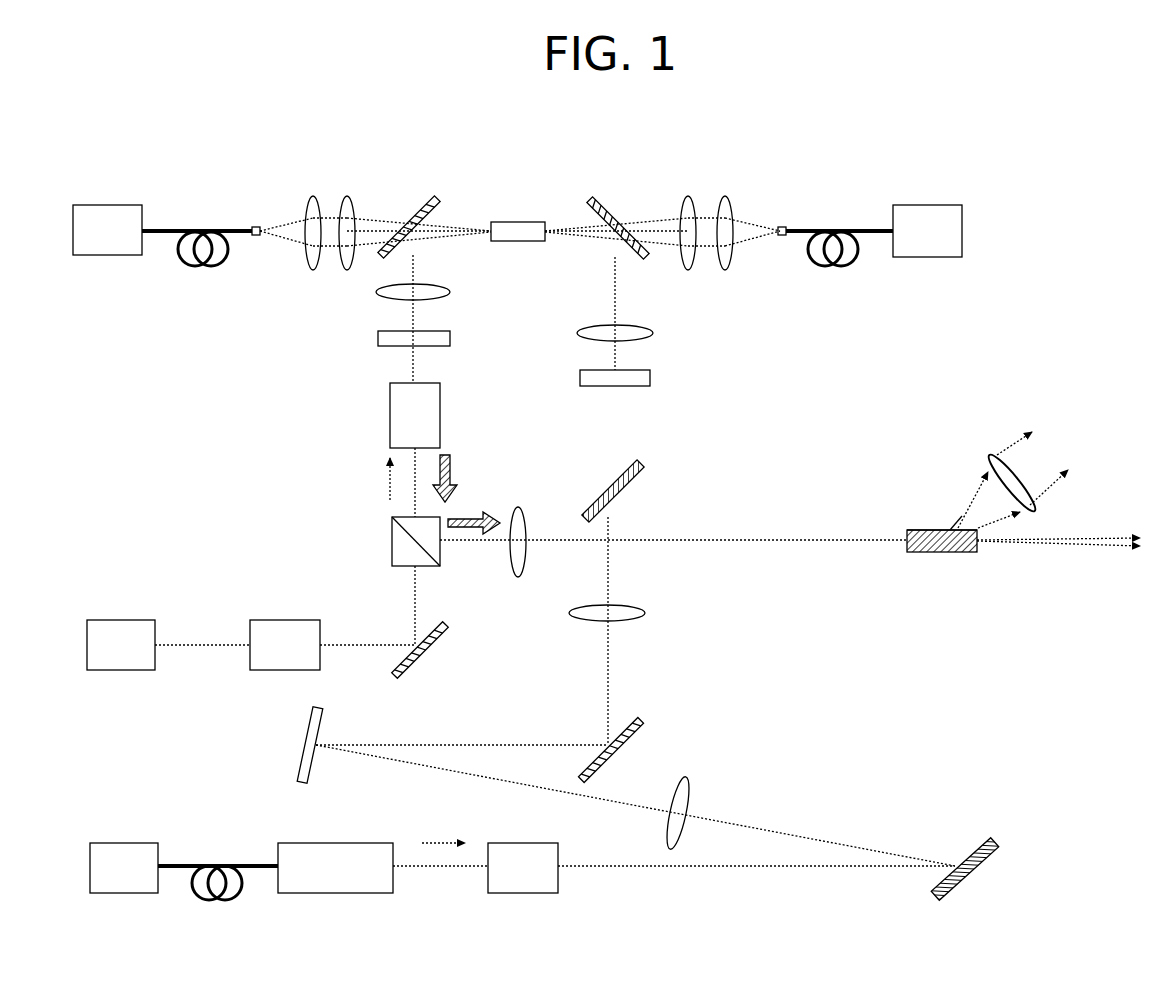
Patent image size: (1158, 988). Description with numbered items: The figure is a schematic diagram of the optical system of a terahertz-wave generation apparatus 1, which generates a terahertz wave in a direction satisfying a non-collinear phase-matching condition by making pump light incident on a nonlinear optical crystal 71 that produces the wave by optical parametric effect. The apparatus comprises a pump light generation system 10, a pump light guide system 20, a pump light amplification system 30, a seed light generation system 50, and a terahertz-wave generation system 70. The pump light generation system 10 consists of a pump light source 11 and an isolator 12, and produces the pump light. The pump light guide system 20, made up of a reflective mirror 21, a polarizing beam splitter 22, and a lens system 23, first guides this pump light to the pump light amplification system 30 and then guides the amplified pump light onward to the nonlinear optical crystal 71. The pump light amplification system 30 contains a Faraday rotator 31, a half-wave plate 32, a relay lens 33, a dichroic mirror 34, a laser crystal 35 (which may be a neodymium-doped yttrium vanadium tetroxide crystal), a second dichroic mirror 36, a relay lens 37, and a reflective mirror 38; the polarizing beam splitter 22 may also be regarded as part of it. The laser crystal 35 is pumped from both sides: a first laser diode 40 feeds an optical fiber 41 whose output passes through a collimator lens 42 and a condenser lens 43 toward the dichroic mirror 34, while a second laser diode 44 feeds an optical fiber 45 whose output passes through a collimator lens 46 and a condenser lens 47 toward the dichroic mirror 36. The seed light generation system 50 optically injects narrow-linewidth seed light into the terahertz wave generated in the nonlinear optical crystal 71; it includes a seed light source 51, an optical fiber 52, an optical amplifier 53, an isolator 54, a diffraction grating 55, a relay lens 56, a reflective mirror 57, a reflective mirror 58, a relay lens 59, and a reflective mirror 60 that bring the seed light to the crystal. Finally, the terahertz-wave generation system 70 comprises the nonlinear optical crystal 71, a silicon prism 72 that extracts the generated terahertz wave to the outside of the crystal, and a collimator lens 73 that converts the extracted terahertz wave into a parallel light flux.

The terahertz-wave generation apparatus 1 is at (1064, 238).
The pump light generation system 10 is at (220, 582).
The pump light source 11 is at (151, 620).
The isolator 12 is at (318, 620).
The pump light guide system 20 is at (477, 624).
The reflective mirror 21 is at (430, 663).
The polarizing beam splitter 22 is at (390, 534).
The lens system 23 is at (518, 506).
The pump light amplification system 30 is at (519, 156).
The Faraday rotator 31 is at (440, 383).
The half-wave plate 32 is at (450, 338).
The relay lens 33 is at (450, 292).
The dichroic mirror 34 is at (433, 203).
The laser crystal 35 is at (518, 221).
The dichroic mirror 36 is at (599, 203).
The relay lens 37 is at (652, 333).
The reflective mirror 38 is at (652, 377).
The first laser diode 40 is at (142, 205).
The optical fiber 41 is at (207, 229).
The collimator lens 42 is at (314, 195).
The condenser lens 43 is at (348, 195).
The second laser diode 44 is at (965, 205).
The optical fiber 45 is at (837, 229).
The collimator lens 46 is at (727, 195).
The condenser lens 47 is at (689, 195).
The seed light generation system 50 is at (704, 688).
The seed light source 51 is at (158, 841).
The optical fiber 52 is at (222, 865).
The optical amplifier 53 is at (393, 841).
The isolator 54 is at (526, 841).
The diffraction grating 55 is at (989, 837).
The relay lens 56 is at (684, 777).
The reflective mirror 57 is at (322, 712).
The reflective mirror 58 is at (638, 721).
The relay lens 59 is at (643, 611).
The reflective mirror 60 is at (643, 471).
The terahertz-wave generation system 70 is at (1007, 416).
The nonlinear optical crystal 71 is at (920, 553).
The silicon prism 72 is at (954, 520).
The collimator lens 73 is at (988, 459).